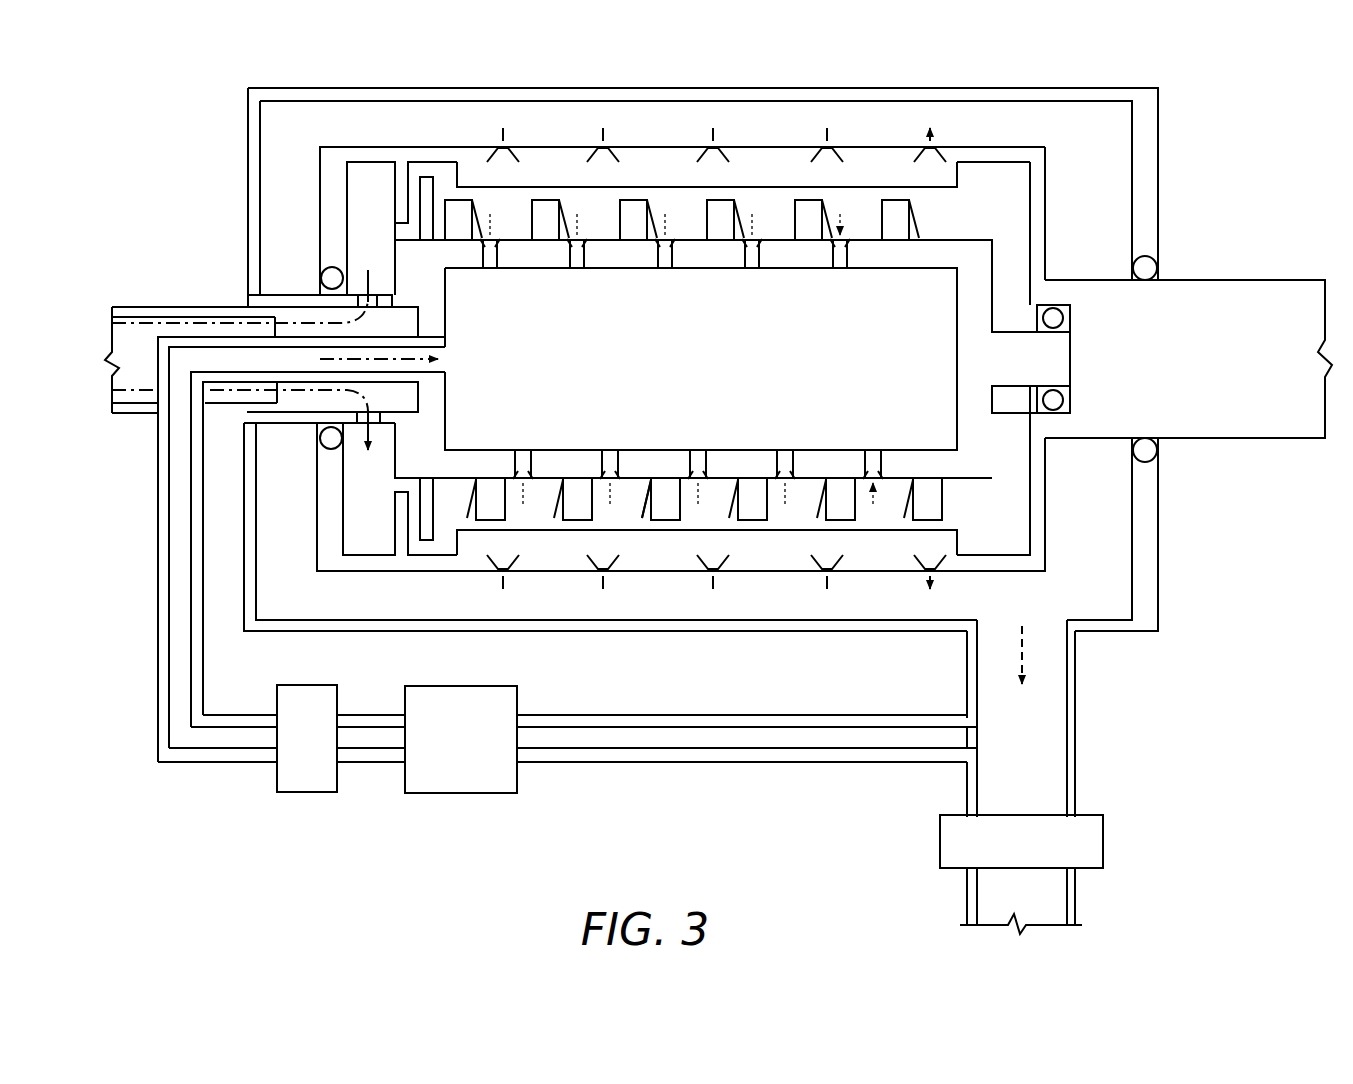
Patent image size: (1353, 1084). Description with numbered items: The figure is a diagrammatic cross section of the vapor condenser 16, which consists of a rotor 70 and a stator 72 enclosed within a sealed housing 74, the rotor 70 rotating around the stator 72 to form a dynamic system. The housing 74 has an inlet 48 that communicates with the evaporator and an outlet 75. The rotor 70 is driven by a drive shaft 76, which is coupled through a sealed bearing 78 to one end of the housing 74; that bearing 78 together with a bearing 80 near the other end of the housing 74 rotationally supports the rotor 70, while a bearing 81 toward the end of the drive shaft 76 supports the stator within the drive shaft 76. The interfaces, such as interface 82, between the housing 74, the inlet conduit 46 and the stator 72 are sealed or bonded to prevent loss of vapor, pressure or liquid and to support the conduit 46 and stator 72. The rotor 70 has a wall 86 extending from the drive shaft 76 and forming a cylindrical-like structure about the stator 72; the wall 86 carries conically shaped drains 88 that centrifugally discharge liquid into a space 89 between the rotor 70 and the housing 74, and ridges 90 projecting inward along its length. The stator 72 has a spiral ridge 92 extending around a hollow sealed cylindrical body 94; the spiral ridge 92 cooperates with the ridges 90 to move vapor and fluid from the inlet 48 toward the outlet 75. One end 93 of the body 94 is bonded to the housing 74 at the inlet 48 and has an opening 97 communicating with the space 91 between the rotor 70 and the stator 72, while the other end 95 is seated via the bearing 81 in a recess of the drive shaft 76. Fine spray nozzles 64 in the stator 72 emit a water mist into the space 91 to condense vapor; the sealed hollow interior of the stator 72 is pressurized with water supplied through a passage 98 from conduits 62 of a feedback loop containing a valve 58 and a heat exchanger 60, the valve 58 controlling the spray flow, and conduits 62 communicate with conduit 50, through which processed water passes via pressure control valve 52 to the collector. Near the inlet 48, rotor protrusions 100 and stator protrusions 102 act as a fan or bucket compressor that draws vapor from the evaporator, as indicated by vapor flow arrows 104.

The vapor condenser 16 is at (148, 131).
The inlet conduit 46 is at (139, 306).
The inlet 48 is at (103, 388).
The conduit 50 is at (1077, 916).
The pressure control valve 52 is at (940, 842).
The valve 58 is at (298, 690).
The heat exchanger 60 is at (457, 688).
The conduits 62 is at (772, 718).
The fine spray nozzles 64 is at (660, 246).
The rotor 70 is at (396, 145).
The stator 72 is at (943, 238).
The housing 74 is at (841, 88).
The outlet 75 is at (1048, 630).
The drive shaft 76 is at (1240, 280).
The sealed bearing 78 is at (1158, 262).
The bearing 80 is at (321, 273).
The bearing 81 is at (1066, 318).
The interface 82 is at (247, 303).
The wall 86 is at (1047, 186).
The drains 88 is at (518, 148).
The space 89 is at (962, 141).
The ridges 90 is at (472, 172).
The space 91 is at (976, 522).
The spiral ridge 92 is at (646, 500).
The stator end 93 is at (247, 423).
The stator body 94 is at (557, 450).
The stator end 95 is at (1072, 360).
The opening 97 is at (362, 300).
The inlet passage 98 is at (432, 343).
The rotor protrusions 100 is at (392, 540).
The stator protrusions 102 is at (438, 541).
The vapor flow arrows 104 is at (178, 322).